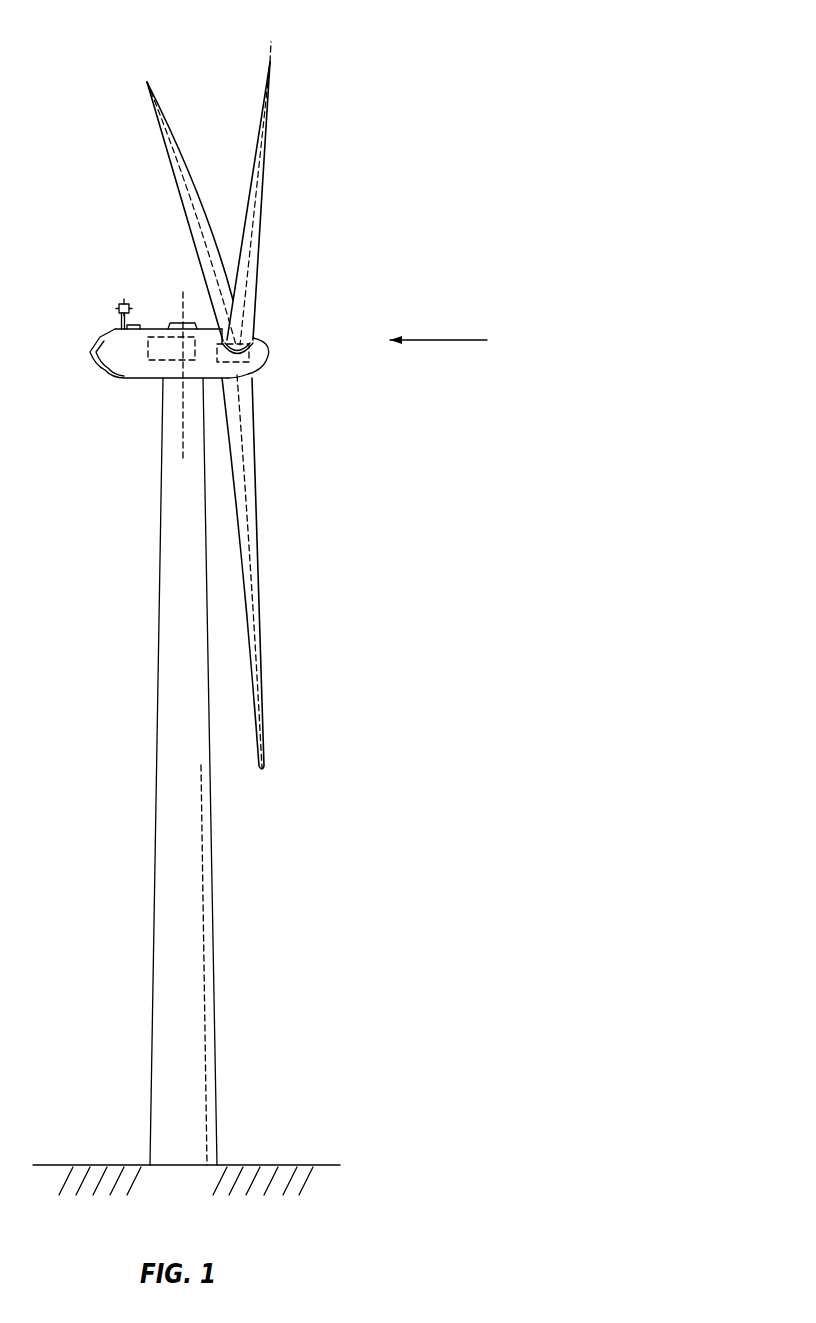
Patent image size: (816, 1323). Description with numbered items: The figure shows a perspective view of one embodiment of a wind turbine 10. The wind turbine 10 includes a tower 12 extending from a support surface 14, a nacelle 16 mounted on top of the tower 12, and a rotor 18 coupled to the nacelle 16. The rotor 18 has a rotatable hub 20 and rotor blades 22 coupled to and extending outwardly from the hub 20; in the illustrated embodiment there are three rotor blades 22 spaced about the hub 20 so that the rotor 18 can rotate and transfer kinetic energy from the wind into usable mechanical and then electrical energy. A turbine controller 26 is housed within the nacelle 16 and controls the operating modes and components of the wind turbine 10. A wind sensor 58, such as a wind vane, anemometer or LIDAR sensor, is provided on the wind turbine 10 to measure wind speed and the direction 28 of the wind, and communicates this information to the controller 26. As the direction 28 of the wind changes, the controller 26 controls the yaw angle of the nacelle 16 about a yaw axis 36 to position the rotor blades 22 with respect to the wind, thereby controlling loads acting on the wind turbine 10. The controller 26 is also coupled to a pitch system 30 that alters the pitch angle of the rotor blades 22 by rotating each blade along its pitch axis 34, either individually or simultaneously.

The wind turbine 10 is at (392, 138).
The tower 12 is at (170, 837).
The support surface 14 is at (107, 1165).
The nacelle 16 is at (130, 380).
The rotor 18 is at (273, 328).
The rotatable hub 20 is at (258, 360).
The rotor blade 22 is at (190, 192).
The turbine controller 26 is at (163, 328).
The direction of the wind 28 is at (447, 340).
The pitch system 30 is at (265, 365).
The pitch axis 34 is at (143, 75).
The yaw axis 36 is at (186, 442).
The wind sensor 58 is at (123, 328).